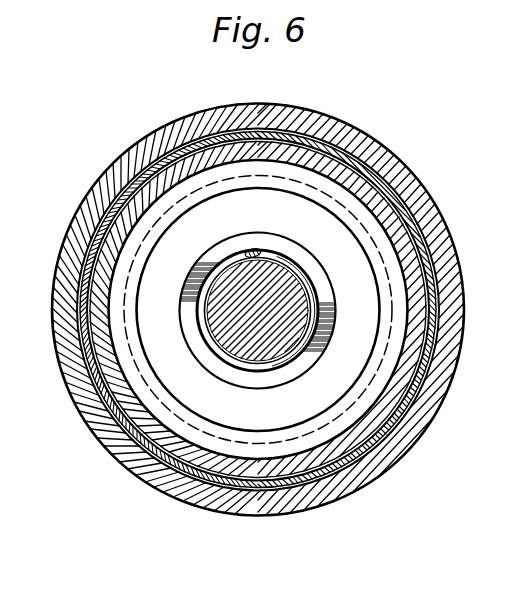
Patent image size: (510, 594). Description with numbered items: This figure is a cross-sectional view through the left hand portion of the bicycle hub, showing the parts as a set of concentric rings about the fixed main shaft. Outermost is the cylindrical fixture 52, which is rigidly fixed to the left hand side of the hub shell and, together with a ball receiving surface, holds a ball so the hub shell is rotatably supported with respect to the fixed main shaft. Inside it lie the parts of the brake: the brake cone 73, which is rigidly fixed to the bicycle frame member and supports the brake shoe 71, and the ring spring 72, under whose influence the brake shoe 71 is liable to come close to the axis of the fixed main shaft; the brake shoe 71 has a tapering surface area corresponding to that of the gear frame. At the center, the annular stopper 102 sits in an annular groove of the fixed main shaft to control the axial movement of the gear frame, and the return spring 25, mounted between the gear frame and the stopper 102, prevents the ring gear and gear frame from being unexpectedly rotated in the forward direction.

The cylindrical fixture 52 is at (296, 120).
The ring spring 72 is at (251, 138).
The brake shoe 71 is at (214, 160).
The brake cone 73 is at (203, 215).
The annular stopper 102 is at (205, 252).
The return spring 25 is at (258, 252).